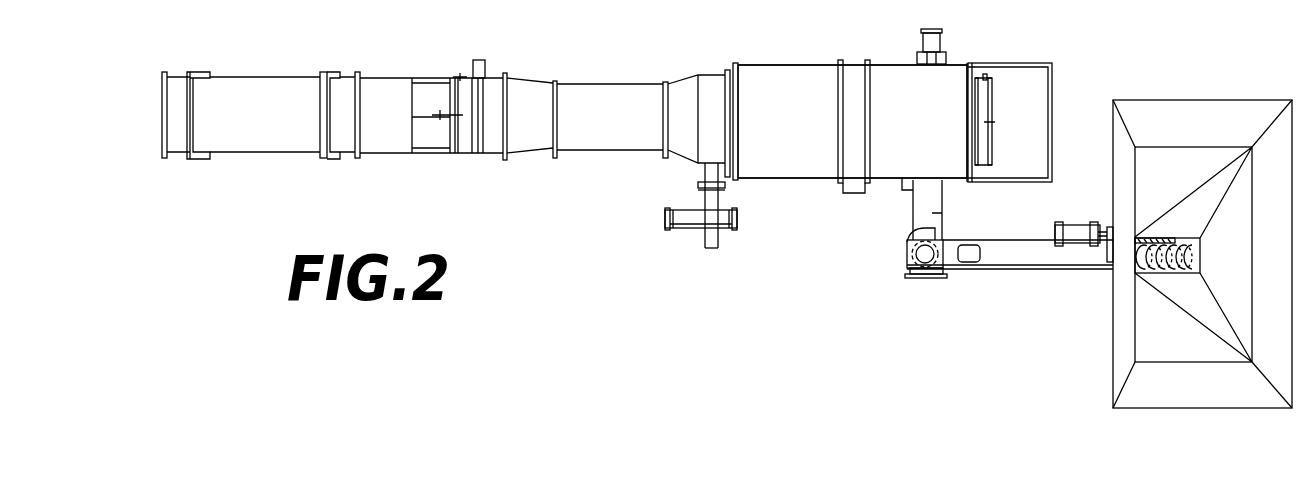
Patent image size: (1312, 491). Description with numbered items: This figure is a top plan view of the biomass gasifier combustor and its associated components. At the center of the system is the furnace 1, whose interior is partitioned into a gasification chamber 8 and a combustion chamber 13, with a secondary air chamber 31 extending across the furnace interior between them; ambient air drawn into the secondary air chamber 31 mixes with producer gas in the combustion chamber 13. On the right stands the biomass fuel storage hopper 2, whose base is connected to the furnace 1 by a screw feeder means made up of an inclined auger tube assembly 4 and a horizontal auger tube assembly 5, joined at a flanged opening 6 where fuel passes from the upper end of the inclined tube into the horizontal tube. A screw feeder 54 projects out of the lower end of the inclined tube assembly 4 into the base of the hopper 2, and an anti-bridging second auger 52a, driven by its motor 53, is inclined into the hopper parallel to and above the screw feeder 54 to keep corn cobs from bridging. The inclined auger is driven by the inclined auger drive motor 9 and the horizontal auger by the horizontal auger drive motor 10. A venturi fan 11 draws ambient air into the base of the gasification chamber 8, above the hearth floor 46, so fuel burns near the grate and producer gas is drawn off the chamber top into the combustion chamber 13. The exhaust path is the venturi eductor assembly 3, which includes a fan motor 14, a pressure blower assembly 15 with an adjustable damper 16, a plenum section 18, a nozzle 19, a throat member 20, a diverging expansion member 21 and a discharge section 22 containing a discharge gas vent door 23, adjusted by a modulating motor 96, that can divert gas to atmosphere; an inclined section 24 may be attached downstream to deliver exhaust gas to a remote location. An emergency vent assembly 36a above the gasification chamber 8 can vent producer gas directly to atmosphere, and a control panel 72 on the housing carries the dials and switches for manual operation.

The furnace 1 is at (893, 62).
The biomass fuel storage hopper 2 is at (1205, 103).
The venturi eductor assembly 3 is at (695, 72).
The inclined auger tube assembly 4 is at (1022, 258).
The horizontal auger tube assembly 5 is at (932, 213).
The flanged opening 6 is at (907, 240).
The gasification chamber 8 is at (942, 80).
The inclined auger drive motor 9 is at (155, 115).
The horizontal auger drive motor 10 is at (935, 40).
The venturi fan 11 is at (703, 238).
The combustion chamber 13 is at (786, 168).
The fan motor 14 is at (737, 222).
The pressure blower assembly 15 is at (712, 248).
The adjustable damper 16 is at (663, 220).
The plenum section 18 is at (717, 115).
The nozzle 19 is at (665, 78).
The throat member 20 is at (605, 85).
The diverging expansion member 21 is at (535, 80).
The discharge section 22 is at (382, 78).
The discharge gas vent door 23 is at (430, 90).
The inclined section 24 is at (252, 87).
The secondary air chamber 31 is at (850, 72).
The emergency vent assembly 36a is at (993, 107).
The hearth floor 46 is at (1040, 107).
The second auger 52a is at (1150, 240).
The motor 53 is at (1080, 230).
The screw feeder 54 is at (1195, 265).
The control panel 72 is at (898, 192).
The modulating motor 96 is at (480, 62).